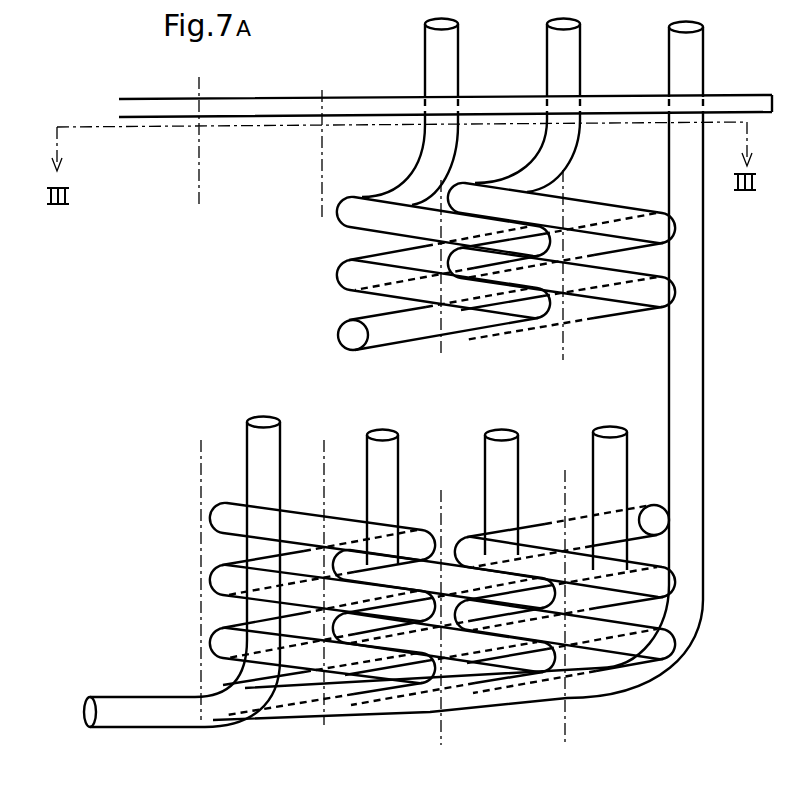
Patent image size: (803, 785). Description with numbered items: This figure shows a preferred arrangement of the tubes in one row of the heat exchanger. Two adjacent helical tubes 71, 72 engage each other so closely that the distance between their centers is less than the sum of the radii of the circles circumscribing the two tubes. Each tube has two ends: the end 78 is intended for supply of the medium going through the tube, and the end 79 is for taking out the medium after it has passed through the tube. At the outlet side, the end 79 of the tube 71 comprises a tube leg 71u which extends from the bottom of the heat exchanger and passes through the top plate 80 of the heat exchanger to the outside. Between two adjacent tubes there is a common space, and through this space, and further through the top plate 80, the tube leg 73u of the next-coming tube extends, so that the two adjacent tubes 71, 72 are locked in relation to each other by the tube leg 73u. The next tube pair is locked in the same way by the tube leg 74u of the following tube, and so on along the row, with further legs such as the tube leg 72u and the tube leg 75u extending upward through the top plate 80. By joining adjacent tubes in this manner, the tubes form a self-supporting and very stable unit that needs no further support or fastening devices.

The top plate 80 is at (298, 106).
The end 78 is at (569, 56).
The helical tube 72 is at (410, 335).
The helical tube 71 is at (588, 312).
The tube leg 71u is at (693, 433).
The tube leg 75u is at (272, 455).
The tube leg 74u is at (390, 467).
The tube leg 73u is at (508, 467).
The tube leg 72u is at (617, 470).
The end 79 is at (612, 682).